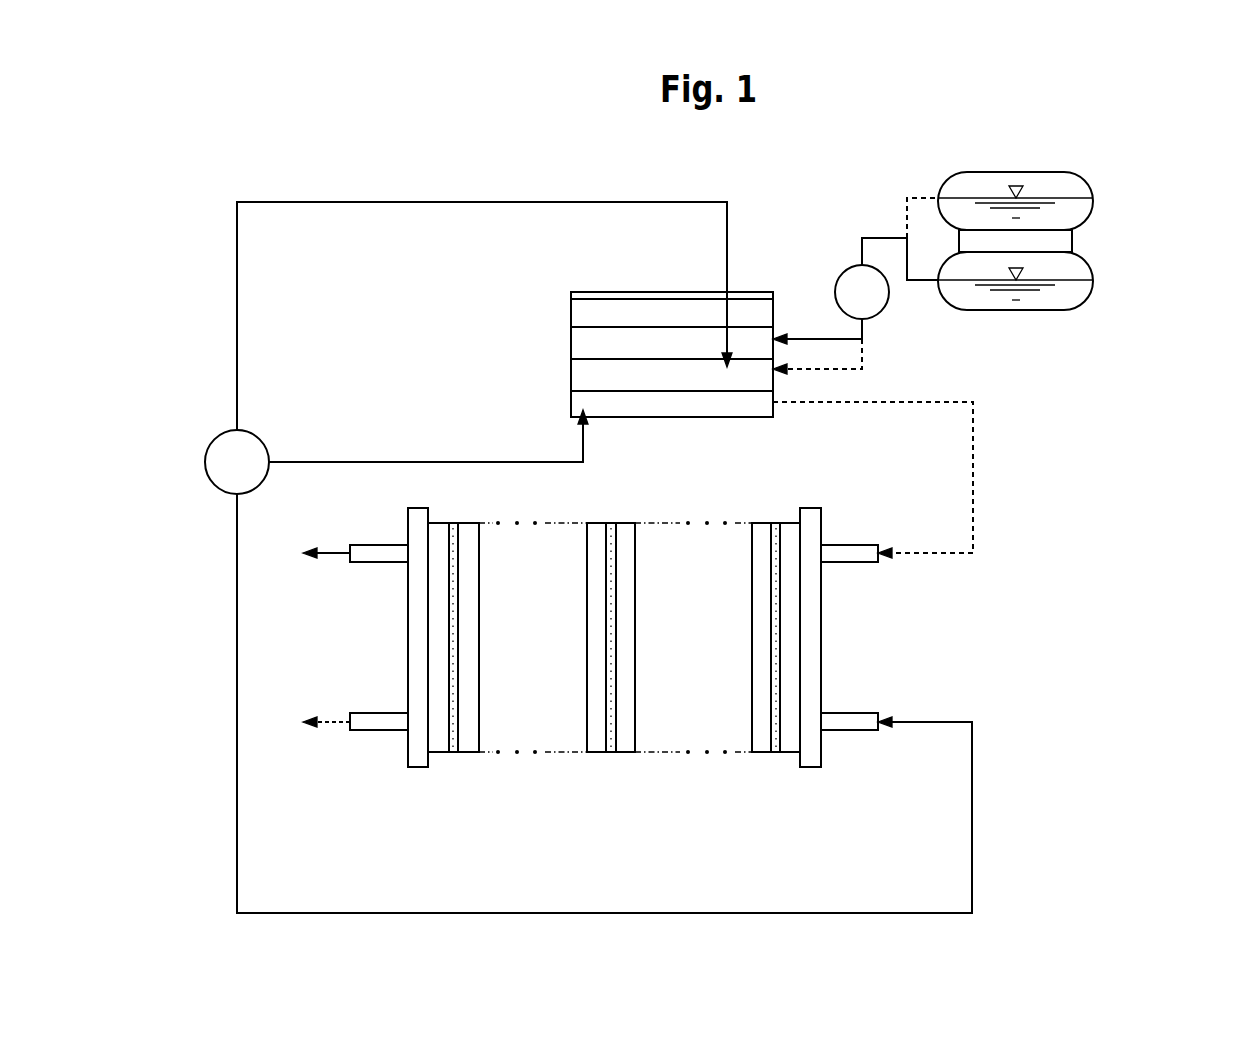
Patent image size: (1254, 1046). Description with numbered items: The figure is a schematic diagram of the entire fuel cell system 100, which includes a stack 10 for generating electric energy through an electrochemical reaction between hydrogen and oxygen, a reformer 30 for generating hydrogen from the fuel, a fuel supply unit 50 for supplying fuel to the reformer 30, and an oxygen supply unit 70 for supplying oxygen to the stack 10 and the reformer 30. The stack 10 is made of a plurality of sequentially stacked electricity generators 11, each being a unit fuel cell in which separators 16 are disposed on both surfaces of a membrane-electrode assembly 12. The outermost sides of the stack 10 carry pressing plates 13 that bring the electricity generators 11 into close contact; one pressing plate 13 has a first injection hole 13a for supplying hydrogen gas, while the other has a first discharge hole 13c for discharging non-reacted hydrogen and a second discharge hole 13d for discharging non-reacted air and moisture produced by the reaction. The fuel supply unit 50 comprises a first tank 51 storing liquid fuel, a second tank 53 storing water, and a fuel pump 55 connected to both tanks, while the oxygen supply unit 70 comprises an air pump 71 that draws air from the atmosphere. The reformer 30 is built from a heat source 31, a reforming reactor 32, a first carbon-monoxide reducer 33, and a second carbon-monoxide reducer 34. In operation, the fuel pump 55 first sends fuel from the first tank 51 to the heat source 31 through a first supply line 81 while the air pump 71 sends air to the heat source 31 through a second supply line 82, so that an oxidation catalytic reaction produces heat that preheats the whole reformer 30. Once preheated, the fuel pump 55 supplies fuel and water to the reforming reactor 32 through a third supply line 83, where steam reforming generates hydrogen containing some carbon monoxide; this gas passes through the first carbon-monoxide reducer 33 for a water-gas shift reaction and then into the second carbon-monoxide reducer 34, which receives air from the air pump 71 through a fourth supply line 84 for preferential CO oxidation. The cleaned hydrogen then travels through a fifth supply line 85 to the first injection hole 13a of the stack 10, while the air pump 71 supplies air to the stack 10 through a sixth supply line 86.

The fuel cell system 100 is at (1158, 290).
The stack 10 is at (872, 613).
The electricity generator 11 is at (643, 848).
The membrane-electrode assembly 12 is at (611, 752).
The separator 16 is at (595, 752).
The pressing plate 13 is at (819, 508).
The first injection hole 13a is at (860, 546).
The first discharge hole 13c is at (370, 713).
The second discharge hole 13d is at (370, 546).
The reformer 30 is at (683, 447).
The heat source 31 is at (572, 375).
The reforming reactor 32 is at (572, 345).
The first carbon-monoxide reducer 33 is at (572, 314).
The second carbon-monoxide reducer 34 is at (572, 405).
The fuel supply unit 50 is at (1118, 197).
The first tank 51 is at (990, 172).
The second tank 53 is at (990, 310).
The fuel pump 55 is at (844, 268).
The oxygen supply unit 70 is at (286, 432).
The air pump 71 is at (254, 440).
The first supply line 81 is at (864, 368).
The second supply line 82 is at (466, 202).
The third supply line 83 is at (818, 341).
The fourth supply line 84 is at (414, 462).
The fifth supply line 85 is at (973, 480).
The sixth supply line 86 is at (236, 661).